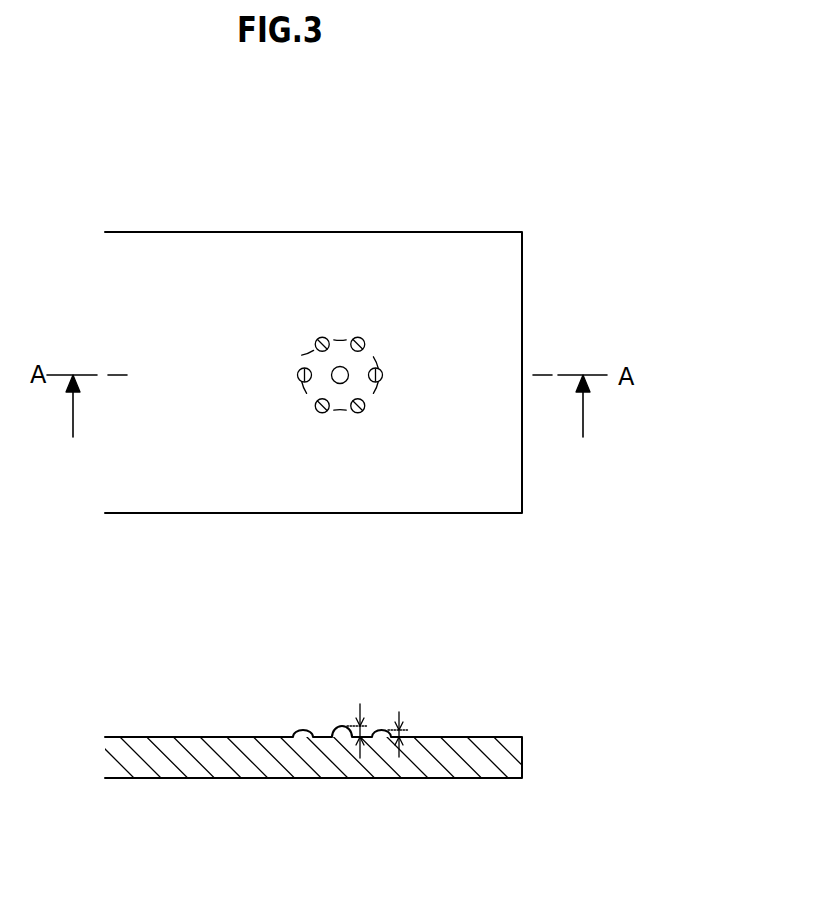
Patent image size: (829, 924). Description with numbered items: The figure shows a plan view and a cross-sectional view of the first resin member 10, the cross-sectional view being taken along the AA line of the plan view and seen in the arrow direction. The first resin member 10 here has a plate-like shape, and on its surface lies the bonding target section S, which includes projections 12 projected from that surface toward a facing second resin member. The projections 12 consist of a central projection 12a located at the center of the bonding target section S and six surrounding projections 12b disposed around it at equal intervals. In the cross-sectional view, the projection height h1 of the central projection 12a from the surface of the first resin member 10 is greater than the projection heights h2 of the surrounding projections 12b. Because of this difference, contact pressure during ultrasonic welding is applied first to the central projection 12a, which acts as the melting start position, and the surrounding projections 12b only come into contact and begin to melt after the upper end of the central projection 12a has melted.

The first resin member 10 is at (440, 238).
The projections 12 is at (379, 394).
The central projection 12a is at (340, 366).
The surrounding projections 12b is at (316, 341).
The bonding target section S is at (310, 394).
The projection height of the central projection h1 is at (355, 716).
The projection heights of the surrounding projections h2 is at (409, 718).